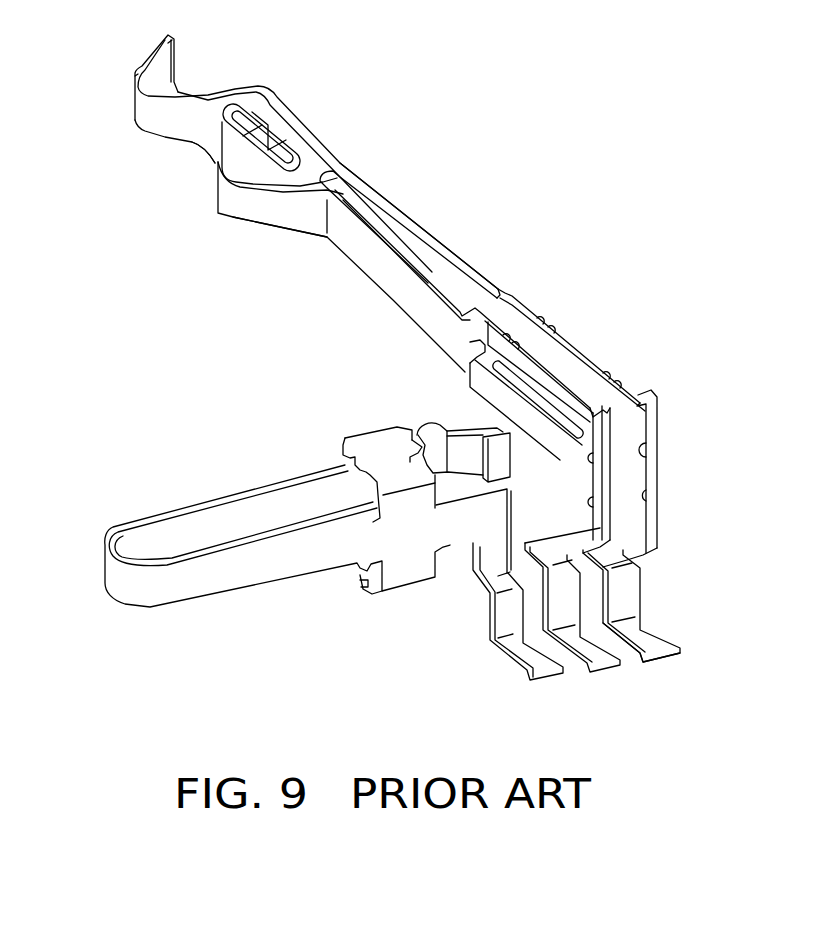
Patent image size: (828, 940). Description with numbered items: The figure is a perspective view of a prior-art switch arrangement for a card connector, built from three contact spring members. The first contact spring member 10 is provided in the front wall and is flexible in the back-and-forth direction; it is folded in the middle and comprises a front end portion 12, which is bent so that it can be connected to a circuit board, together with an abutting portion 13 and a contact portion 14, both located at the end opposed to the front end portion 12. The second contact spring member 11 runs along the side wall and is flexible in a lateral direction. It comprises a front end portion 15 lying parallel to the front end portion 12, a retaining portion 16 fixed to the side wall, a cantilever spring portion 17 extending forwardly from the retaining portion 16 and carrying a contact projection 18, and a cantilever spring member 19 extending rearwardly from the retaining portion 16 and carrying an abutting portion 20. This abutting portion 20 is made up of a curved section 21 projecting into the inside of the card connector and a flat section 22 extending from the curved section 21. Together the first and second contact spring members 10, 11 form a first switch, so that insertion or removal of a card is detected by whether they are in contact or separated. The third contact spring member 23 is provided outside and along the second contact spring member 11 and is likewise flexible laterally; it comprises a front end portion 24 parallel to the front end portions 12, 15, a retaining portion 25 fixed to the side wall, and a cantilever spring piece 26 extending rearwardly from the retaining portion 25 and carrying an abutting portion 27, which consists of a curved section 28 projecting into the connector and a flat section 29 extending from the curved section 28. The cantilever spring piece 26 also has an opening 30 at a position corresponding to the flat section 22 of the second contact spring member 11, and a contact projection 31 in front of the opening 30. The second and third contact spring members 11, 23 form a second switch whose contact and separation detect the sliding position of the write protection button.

The first contact spring member 10 is at (207, 497).
The second contact spring member 11 is at (366, 292).
The front end portion 12 is at (520, 660).
The abutting portion 13 is at (417, 440).
The contact portion 14 is at (610, 502).
The front end portion 15 is at (623, 662).
The retaining portion 16 is at (533, 377).
The cantilever spring portion 17 is at (470, 397).
The contact projection 18 is at (510, 465).
The cantilever spring member 19 is at (418, 295).
The abutting portion 20 is at (208, 193).
The curved section 21 is at (229, 207).
The flat section 22 is at (210, 152).
The third contact spring member 23 is at (508, 271).
The front end portion 24 is at (650, 632).
The retaining portion 25 is at (627, 390).
The cantilever spring piece 26 is at (432, 232).
The abutting portion 27 is at (185, 80).
The curved section 28 is at (130, 100).
The flat section 29 is at (147, 57).
The opening 30 is at (293, 133).
The contact projection 31 is at (353, 207).